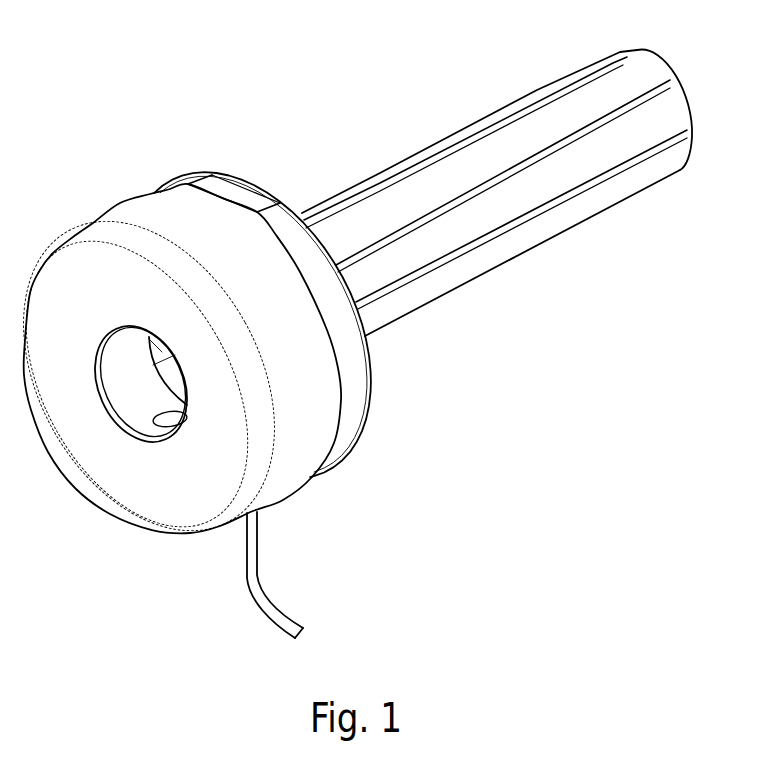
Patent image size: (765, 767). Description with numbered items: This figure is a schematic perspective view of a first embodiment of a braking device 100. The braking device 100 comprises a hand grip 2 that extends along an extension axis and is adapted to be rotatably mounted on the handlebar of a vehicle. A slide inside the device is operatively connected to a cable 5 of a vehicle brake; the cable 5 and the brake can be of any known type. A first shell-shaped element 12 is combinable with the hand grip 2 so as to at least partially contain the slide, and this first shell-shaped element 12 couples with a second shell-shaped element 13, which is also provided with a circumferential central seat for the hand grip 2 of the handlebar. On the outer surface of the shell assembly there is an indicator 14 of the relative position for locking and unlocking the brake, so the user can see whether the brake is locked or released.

The braking device 100 is at (268, 140).
The hand grip 2 is at (537, 90).
The first shell-shaped element 12 is at (288, 467).
The second shell-shaped element 13 is at (371, 383).
The indicator 14 is at (210, 177).
The cable 5 is at (256, 573).